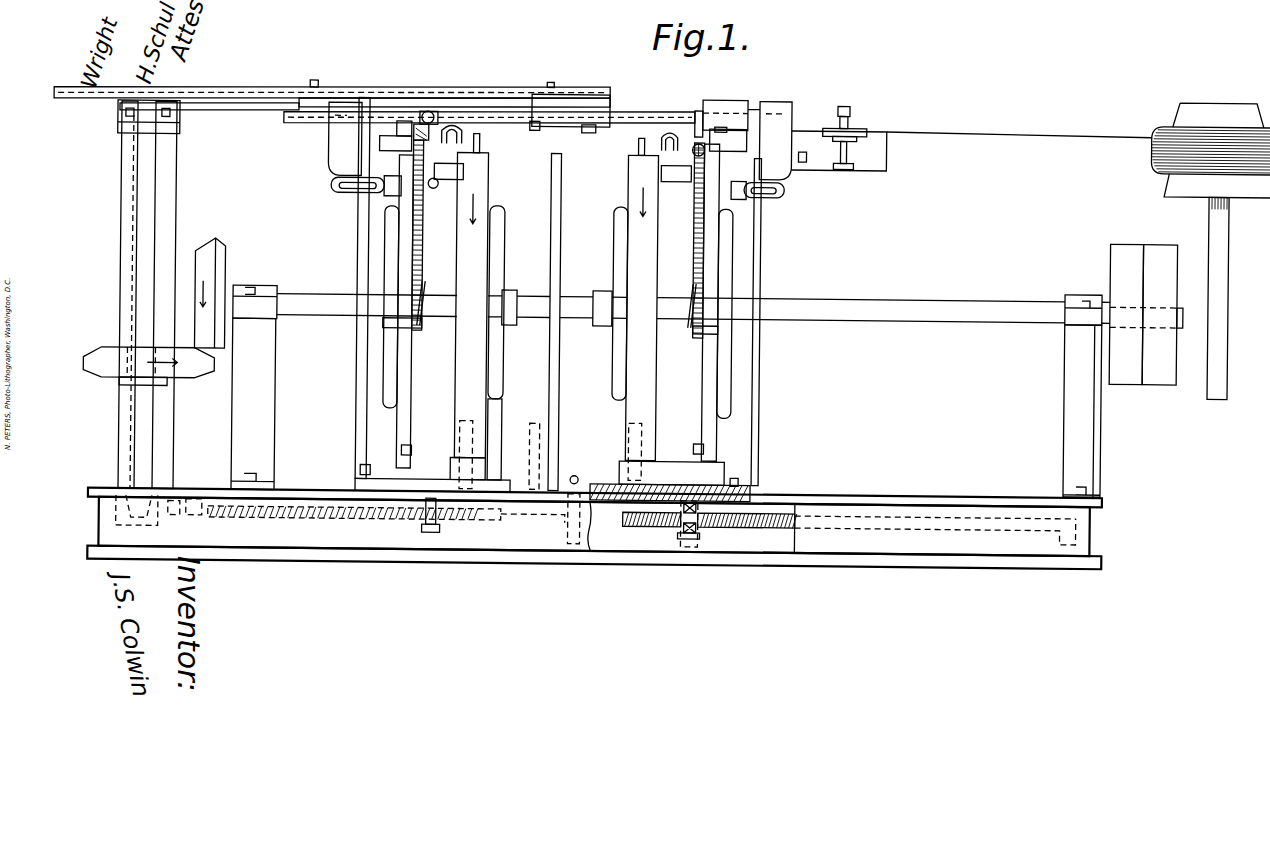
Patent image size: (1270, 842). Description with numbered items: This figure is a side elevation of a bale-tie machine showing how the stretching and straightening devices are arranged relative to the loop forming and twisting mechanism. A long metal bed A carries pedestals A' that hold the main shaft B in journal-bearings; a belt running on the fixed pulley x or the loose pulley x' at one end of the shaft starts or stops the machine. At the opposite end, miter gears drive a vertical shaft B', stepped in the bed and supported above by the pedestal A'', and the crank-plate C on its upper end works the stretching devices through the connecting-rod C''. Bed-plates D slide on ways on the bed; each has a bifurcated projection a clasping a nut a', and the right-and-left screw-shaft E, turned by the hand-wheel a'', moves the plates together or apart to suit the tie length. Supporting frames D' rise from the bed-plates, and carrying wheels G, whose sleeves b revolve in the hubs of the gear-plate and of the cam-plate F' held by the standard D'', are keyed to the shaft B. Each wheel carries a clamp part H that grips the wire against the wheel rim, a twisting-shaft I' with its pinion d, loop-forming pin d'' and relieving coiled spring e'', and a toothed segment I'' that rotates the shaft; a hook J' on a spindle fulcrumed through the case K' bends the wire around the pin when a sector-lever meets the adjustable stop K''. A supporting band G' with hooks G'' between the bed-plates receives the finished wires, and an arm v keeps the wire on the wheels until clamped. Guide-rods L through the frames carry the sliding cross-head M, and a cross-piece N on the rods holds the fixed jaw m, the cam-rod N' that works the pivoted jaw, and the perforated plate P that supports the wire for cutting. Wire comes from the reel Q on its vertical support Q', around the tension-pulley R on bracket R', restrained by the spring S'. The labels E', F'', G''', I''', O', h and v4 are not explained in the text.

The bed A is at (599, 529).
The pedestal A' is at (663, 391).
The support or pedestal A'' is at (200, 259).
The shaft B is at (693, 303).
The vertical shaft B' is at (133, 294).
The crank-plate C is at (332, 81).
The connecting-rod C'' is at (455, 83).
The bed-plate D is at (546, 475).
The supporting frame or standard D' is at (546, 278).
The standard D'' is at (564, 440).
The screw-shaft E is at (385, 524).
The rack E' is at (848, 534).
The cam-plate F' is at (558, 312).
The guide rod F'' is at (558, 303).
The carrying disk or wheel G is at (556, 307).
The supporting band G' is at (571, 321).
The hook G'' is at (523, 441).
The slide guide G''' is at (448, 442).
The clamp part H is at (475, 154).
The twisting-shaft I' is at (677, 141).
The toothed segment I'' is at (419, 304).
The rack bar I''' is at (693, 302).
The U-shaped hook J' is at (560, 132).
The case K' is at (606, 191).
The stop K'' is at (353, 195).
The guide-rod L is at (236, 112).
The sliding cross-head M is at (566, 96).
The cross-piece N is at (726, 99).
The cam-rod N' is at (520, 132).
The gear wheel O' is at (431, 125).
The plate P is at (688, 110).
The cone or reel Q is at (1210, 134).
The vertical support Q' is at (1232, 298).
The grooved tension-pulley R is at (845, 138).
The bracket R' is at (971, 159).
The spring S' is at (829, 109).
The bifurcated downward projection a is at (556, 525).
The nut a' is at (568, 537).
The hand-wheel a'' is at (658, 502).
The elongated sleeve b is at (557, 292).
The pinion d is at (561, 145).
The loop-forming pin d'' is at (393, 134).
The coiled spring e'' is at (429, 184).
The bracket h is at (422, 322).
The fixed jaw m is at (726, 125).
The arm v is at (706, 448).
The stop v4 is at (403, 450).
The fixed pulley x is at (1126, 314).
The loose pulley x' is at (1146, 314).